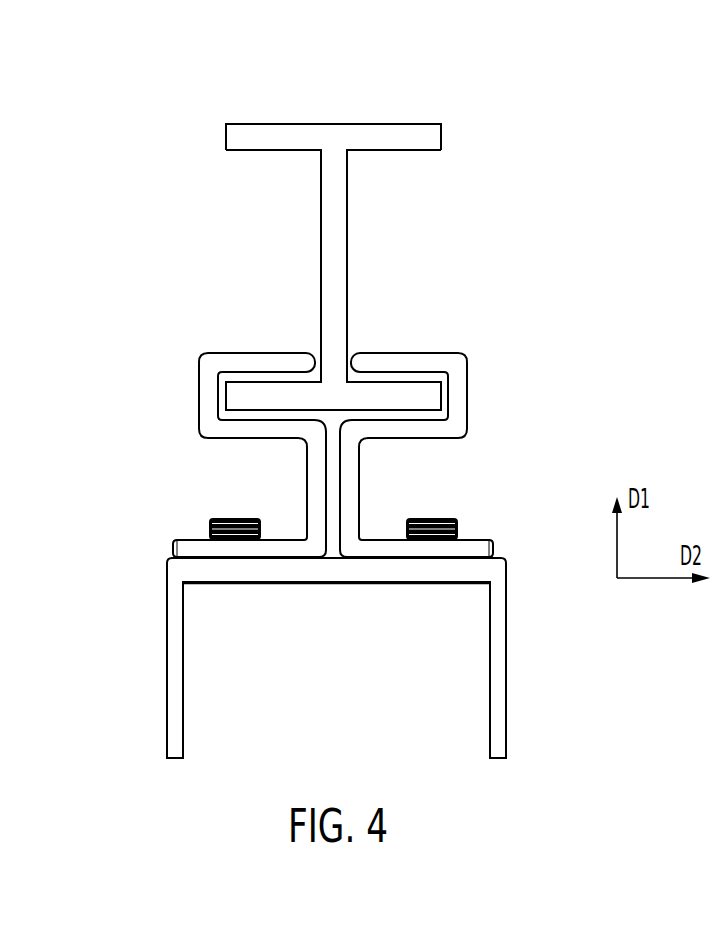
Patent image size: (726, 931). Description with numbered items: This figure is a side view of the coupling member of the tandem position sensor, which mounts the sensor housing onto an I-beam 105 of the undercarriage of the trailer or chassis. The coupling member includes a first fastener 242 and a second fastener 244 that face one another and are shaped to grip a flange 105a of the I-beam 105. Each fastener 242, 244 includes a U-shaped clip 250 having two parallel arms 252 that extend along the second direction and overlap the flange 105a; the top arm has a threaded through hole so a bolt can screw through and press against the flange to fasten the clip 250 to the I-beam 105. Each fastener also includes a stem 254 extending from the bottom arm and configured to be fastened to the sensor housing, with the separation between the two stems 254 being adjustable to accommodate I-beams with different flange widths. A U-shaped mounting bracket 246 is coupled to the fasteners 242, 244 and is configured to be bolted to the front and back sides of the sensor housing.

The I-beam 105 is at (355, 222).
The flange 105a is at (257, 130).
The U-shaped clip 250 is at (358, 425).
The first fastener 242 is at (249, 455).
The second fastener 244 is at (416, 455).
The parallel arms 252 is at (260, 428).
The stem 254 is at (317, 490).
The U-shaped mounting bracket 246 is at (500, 630).